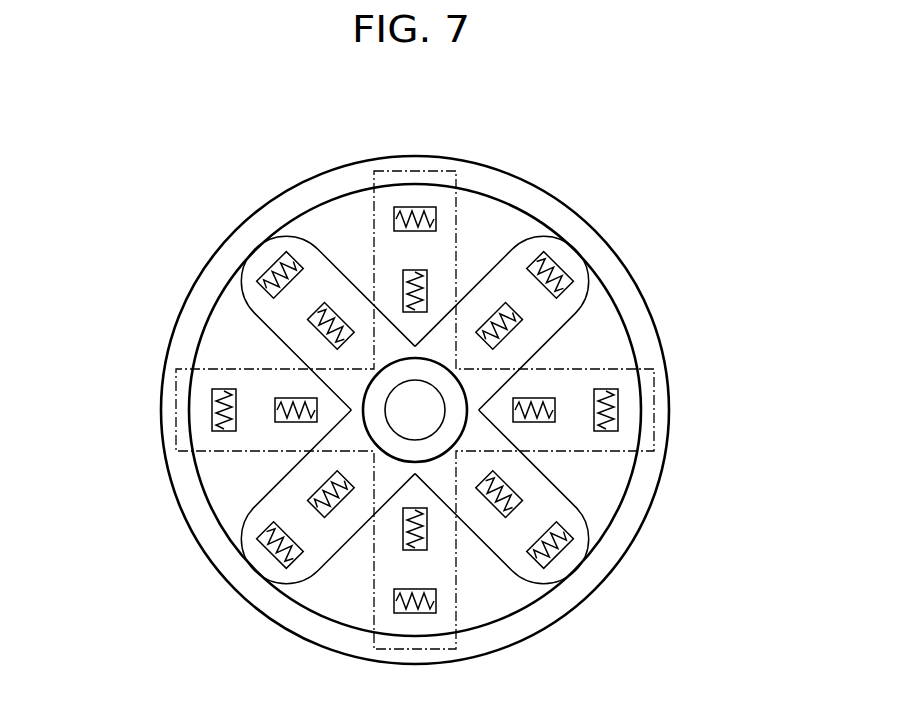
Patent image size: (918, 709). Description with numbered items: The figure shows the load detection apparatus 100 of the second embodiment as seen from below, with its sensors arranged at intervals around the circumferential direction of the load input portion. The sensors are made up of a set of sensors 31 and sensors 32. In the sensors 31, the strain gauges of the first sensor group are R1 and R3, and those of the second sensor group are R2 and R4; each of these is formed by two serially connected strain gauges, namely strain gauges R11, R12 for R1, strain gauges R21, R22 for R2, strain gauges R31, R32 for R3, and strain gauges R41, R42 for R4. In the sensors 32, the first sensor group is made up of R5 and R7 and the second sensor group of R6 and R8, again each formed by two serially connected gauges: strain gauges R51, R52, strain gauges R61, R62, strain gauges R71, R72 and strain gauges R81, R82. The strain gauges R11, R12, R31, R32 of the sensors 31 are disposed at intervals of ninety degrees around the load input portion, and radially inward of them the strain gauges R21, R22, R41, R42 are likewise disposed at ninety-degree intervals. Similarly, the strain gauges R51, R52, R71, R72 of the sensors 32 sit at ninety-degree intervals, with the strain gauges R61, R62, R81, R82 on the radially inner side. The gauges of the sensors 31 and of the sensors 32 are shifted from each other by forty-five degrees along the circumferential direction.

The load detection apparatus 100 is at (128, 194).
The sensors 31 is at (172, 408).
The sensors 32 is at (572, 617).
The strain gauge R11 is at (208, 388).
The strain gauge R12 is at (406, 206).
The strain gauge R21 is at (406, 270).
The strain gauge R22 is at (297, 391).
The strain gauge R31 is at (392, 595).
The strain gauge R32 is at (623, 374).
The strain gauge R41 is at (550, 374).
The strain gauge R42 is at (432, 545).
The strain gauge R51 is at (262, 258).
The strain gauge R52 is at (570, 252).
The strain gauge R61 is at (323, 307).
The strain gauge R62 is at (506, 300).
The strain gauge R71 is at (317, 482).
The strain gauge R72 is at (570, 532).
The strain gauge R81 is at (258, 532).
The strain gauge R82 is at (510, 477).